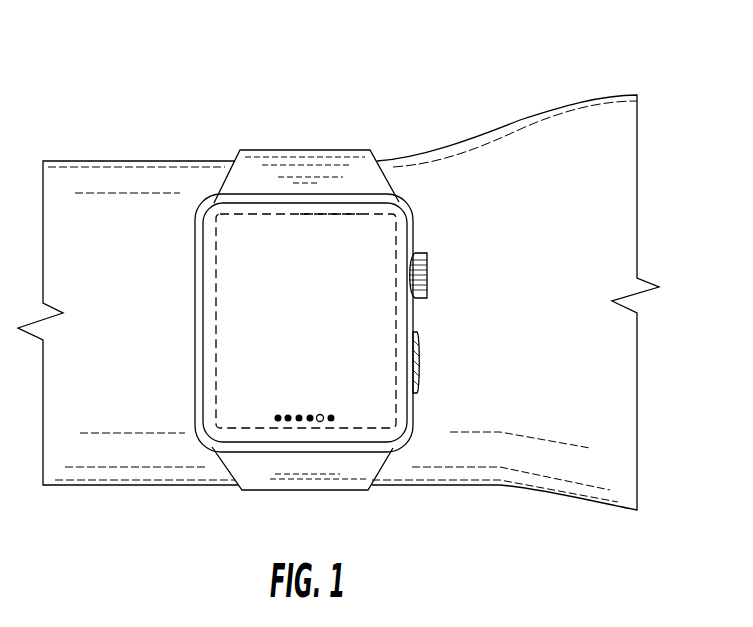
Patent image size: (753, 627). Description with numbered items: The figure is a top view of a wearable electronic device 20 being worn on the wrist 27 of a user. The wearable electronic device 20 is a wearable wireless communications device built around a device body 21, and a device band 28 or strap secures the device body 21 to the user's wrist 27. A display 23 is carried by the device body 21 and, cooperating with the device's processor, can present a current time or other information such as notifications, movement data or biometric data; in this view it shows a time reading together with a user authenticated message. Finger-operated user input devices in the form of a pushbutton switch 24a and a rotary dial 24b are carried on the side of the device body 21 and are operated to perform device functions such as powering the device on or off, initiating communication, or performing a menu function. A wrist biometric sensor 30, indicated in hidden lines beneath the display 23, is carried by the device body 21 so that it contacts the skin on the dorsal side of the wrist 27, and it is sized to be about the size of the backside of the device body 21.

The wearable electronic device 20 is at (287, 277).
The device body 21 is at (412, 213).
The display 23 is at (220, 250).
The pushbutton switch 24a is at (420, 365).
The rotary dial 24b is at (427, 272).
The wrist 27 is at (120, 447).
The device band 28 is at (250, 466).
The wrist biometric sensor 30 is at (343, 213).